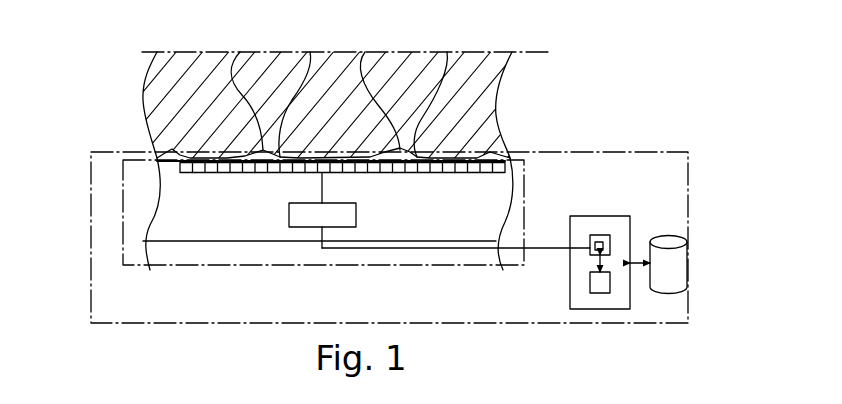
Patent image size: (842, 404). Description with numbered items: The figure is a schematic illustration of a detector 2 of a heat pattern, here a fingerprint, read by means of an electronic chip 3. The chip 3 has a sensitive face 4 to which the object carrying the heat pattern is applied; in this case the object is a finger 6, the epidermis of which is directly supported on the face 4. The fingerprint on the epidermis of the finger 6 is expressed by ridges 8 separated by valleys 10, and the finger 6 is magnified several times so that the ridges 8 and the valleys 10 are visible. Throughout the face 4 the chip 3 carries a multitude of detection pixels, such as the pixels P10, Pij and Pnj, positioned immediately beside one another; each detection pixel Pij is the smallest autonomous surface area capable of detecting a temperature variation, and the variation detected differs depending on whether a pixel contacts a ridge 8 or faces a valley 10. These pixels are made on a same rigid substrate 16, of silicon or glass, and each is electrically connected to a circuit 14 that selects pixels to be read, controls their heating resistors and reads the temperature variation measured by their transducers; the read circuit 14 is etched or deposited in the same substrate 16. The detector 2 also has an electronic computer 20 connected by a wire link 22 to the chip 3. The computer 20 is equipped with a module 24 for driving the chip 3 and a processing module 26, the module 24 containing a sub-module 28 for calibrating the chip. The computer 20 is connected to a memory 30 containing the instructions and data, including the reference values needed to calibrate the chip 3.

The detector 2 is at (88, 228).
The electronic chip 3 is at (120, 172).
The sensitive face 4 is at (475, 161).
The finger 6 is at (495, 99).
The ridges 8 is at (310, 52).
The valleys 10 is at (240, 52).
The circuit 14 is at (322, 210).
The substrate 16 is at (493, 212).
The electronic computer 20 is at (588, 215).
The wire link 22 is at (507, 249).
The module for driving the chip 24 is at (596, 234).
The processing module 26 is at (594, 293).
The sub-module for calibrating the chip 28 is at (612, 243).
The memory 30 is at (663, 293).
The detection pixel P10 is at (296, 156).
The detection pixel Pij is at (342, 197).
The detection pixel Pnj is at (473, 165).